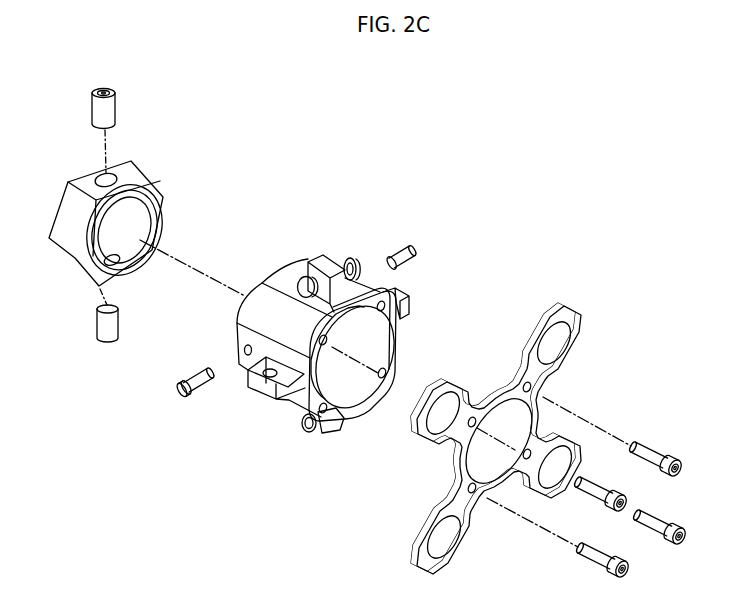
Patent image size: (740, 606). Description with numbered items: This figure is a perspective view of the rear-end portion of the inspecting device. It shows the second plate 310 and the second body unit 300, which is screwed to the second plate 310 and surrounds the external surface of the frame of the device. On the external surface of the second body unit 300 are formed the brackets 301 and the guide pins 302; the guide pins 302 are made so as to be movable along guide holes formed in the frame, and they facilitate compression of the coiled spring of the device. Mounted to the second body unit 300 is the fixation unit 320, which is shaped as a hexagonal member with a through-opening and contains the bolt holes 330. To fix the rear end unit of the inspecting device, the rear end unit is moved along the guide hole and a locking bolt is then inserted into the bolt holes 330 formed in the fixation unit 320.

The second body unit 300 is at (292, 270).
The brackets 301 is at (330, 256).
The guide pins 302 is at (202, 385).
The second plate 310 is at (572, 313).
The fixation unit 320 is at (143, 182).
The bolt holes 330 is at (95, 174).